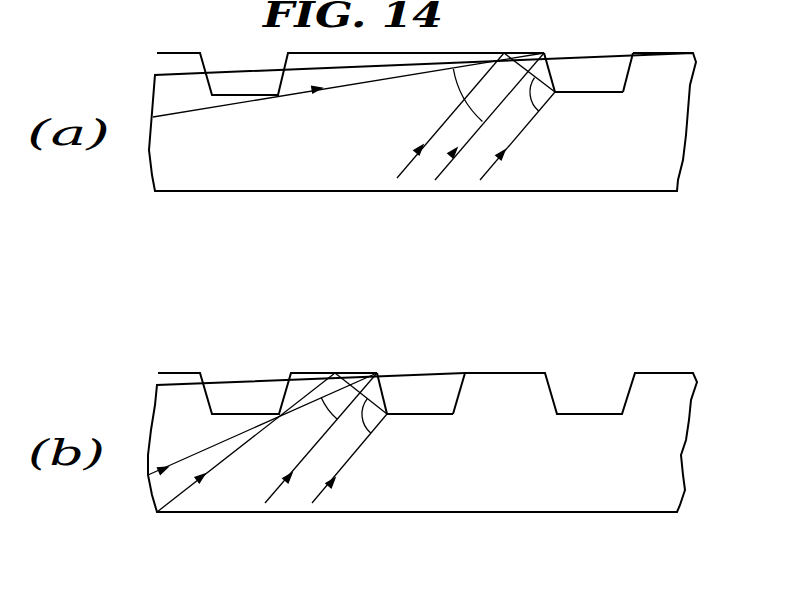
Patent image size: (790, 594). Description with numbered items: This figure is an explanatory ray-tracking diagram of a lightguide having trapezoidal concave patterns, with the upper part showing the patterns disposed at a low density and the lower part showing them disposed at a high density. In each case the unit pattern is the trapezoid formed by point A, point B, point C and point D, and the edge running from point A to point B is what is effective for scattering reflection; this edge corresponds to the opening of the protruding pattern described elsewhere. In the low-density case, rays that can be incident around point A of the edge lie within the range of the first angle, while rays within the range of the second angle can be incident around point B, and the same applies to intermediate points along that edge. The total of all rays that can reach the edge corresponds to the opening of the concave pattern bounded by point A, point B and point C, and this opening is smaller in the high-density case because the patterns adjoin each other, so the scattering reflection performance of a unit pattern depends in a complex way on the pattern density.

The point A is at (460, 219).
The point B is at (505, 269).
The point C is at (543, 249).
The point D is at (578, 198).